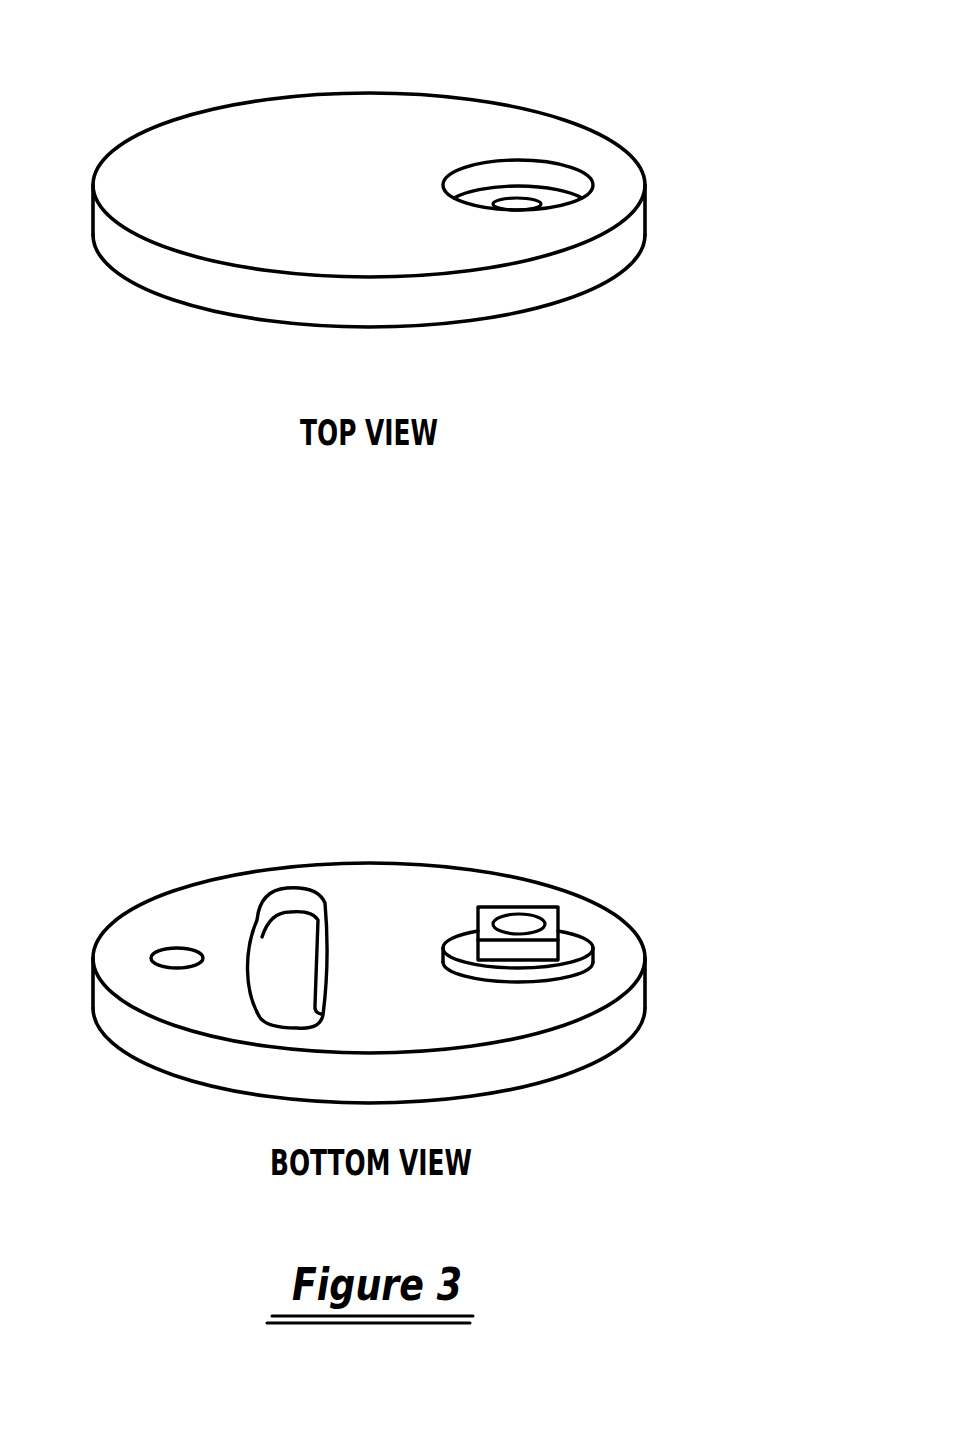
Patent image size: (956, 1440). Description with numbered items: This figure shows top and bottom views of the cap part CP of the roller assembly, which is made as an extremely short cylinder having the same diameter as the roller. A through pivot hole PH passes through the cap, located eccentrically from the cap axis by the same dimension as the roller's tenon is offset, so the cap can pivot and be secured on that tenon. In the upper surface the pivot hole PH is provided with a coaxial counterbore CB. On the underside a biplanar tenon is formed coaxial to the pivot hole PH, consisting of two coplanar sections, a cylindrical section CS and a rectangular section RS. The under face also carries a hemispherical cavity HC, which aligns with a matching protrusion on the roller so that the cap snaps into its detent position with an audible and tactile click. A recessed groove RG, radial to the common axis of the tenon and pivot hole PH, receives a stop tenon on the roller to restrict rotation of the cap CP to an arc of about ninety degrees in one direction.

The counterbore CB is at (518, 160).
The pivot hole PH is at (530, 201).
The cap part CP is at (645, 218).
The hemispherical cavity HC is at (168, 955).
The recessed groove RG is at (317, 892).
The rectangular section RS is at (562, 913).
The cylindrical section CS is at (593, 952).